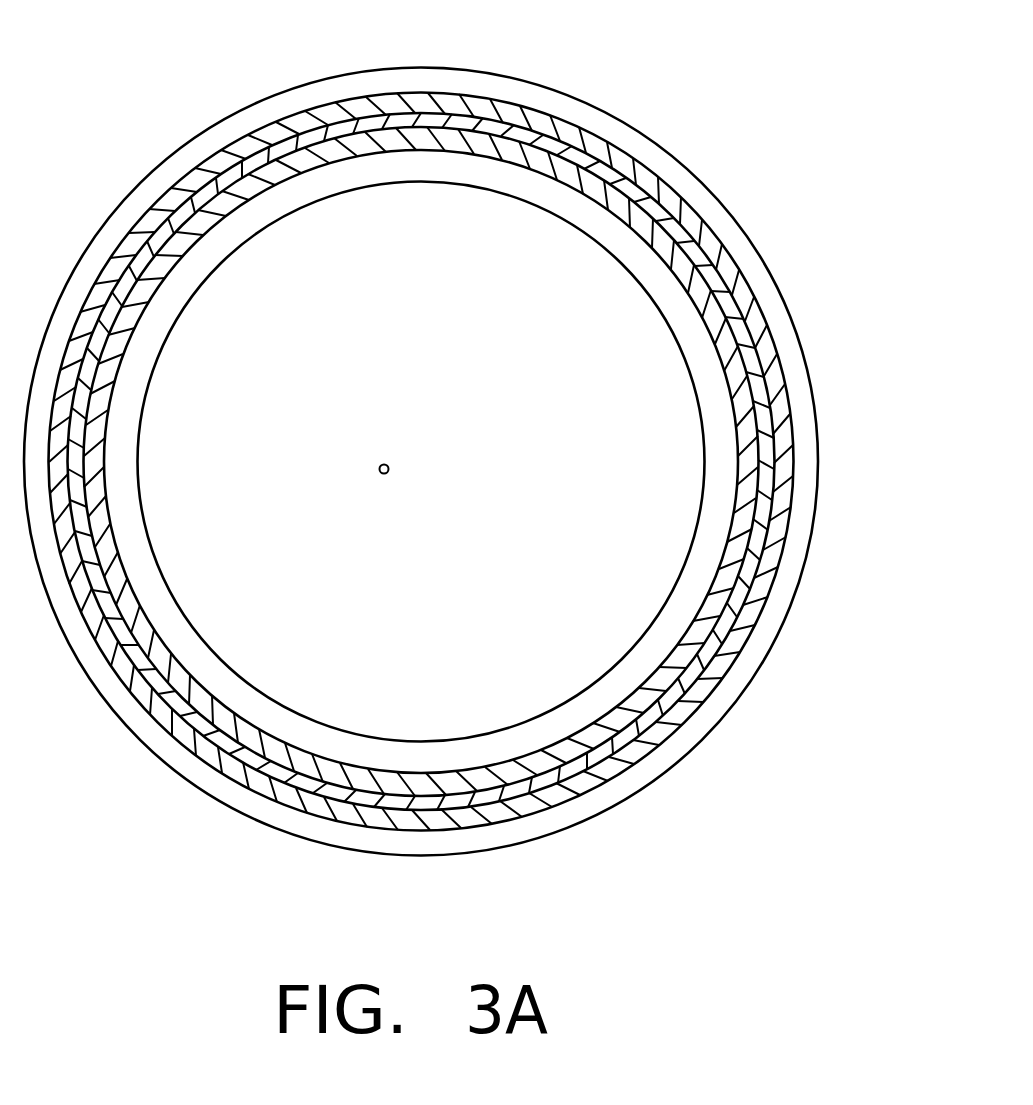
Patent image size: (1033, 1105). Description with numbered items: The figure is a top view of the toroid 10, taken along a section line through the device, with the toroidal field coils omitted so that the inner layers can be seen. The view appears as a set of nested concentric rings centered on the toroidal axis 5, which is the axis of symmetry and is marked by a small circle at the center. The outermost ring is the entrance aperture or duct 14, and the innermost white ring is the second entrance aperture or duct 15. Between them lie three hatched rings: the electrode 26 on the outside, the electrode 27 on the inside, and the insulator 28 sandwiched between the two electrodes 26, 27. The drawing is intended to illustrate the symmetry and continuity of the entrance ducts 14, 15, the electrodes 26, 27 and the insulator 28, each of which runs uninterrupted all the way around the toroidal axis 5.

The catheter / tubular assembly 10 is at (471, 428).
The entrance aperture or duct 14 is at (458, 88).
The electrode 26 is at (525, 118).
The insulator 28 is at (587, 163).
The electrode 27 is at (680, 270).
The entrance aperture or duct 15 is at (600, 230).
The toroidal axis 5 is at (389, 465).